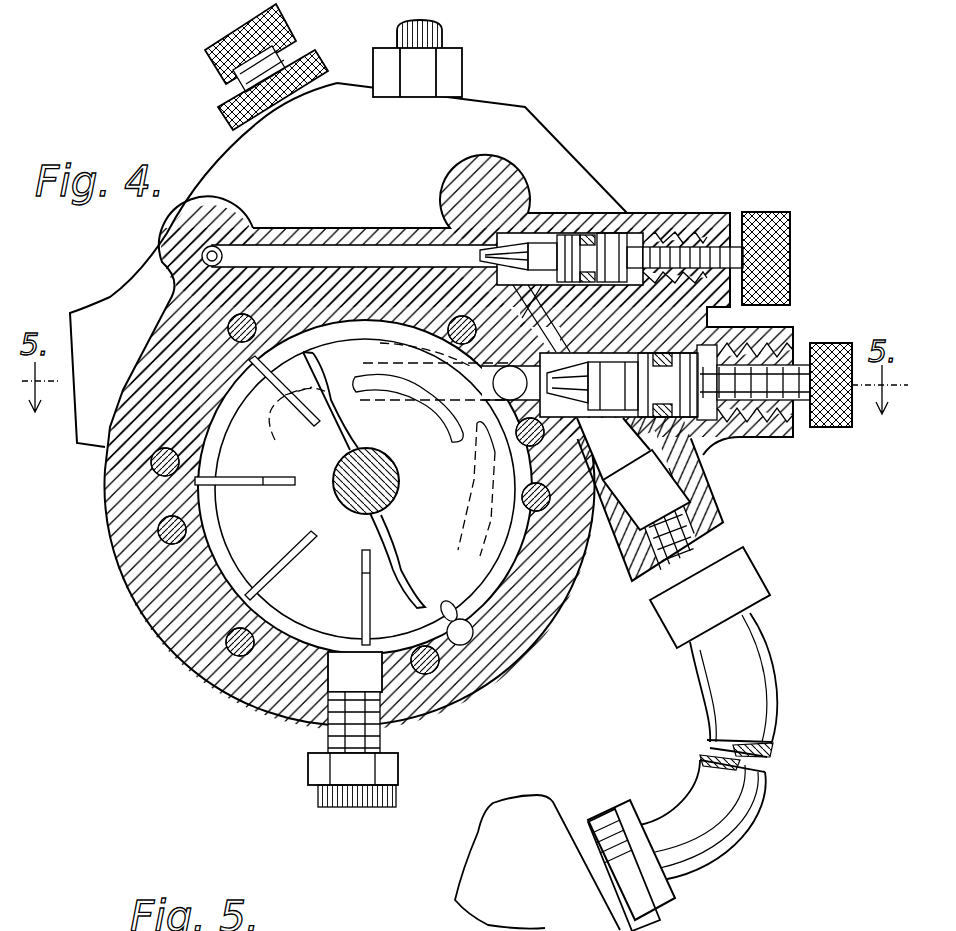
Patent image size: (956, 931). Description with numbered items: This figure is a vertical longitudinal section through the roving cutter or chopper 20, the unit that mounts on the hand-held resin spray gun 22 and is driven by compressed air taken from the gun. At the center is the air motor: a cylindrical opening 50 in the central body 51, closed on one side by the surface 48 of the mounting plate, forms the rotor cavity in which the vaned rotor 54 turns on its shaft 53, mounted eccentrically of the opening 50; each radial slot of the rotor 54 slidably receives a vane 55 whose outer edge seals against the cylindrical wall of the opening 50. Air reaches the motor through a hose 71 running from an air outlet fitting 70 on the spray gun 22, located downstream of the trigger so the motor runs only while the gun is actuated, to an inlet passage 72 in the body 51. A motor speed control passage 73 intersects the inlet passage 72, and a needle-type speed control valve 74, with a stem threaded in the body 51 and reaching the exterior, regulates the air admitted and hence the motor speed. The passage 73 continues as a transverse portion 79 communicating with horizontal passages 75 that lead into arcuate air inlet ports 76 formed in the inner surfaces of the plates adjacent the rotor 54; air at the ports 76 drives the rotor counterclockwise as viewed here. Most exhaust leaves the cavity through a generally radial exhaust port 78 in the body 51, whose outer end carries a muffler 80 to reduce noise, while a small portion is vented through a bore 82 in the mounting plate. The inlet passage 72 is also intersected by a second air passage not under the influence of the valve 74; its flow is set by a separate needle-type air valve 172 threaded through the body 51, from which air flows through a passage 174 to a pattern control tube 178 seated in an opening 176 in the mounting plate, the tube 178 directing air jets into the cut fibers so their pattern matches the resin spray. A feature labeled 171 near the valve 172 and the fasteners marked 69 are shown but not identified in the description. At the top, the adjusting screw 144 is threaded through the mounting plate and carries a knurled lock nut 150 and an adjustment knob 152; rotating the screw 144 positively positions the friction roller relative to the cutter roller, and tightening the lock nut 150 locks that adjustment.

The roving cutter 20 is at (607, 124).
The hand-held resin spray gun 22 is at (524, 783).
The surface of the mounting plate 48 is at (225, 550).
The cylindrical opening 50 is at (205, 560).
The central body 51 is at (146, 651).
The rotor shaft 53 is at (390, 478).
The vaned rotor 54 is at (255, 501).
The vane 55 is at (363, 572).
The bolts 69 is at (150, 466).
The air outlet fitting 70 is at (540, 815).
The air hose 71 is at (763, 795).
The inlet passage 72 is at (688, 488).
The motor speed control passage 73 is at (643, 477).
The speed control valve 74 is at (840, 334).
The horizontal passages 75 is at (382, 357).
The arcuate air inlet ports 76 is at (435, 418).
The exhaust port 78 is at (330, 680).
The transverse portion 79 is at (508, 366).
The muffler 80 is at (318, 798).
The bore 82 is at (462, 513).
The adjusting screw 144 is at (255, 70).
The knurled lock nut 150 is at (303, 72).
The adjustment knob 152 is at (206, 48).
The passage 171 is at (548, 332).
The air valve 172 is at (797, 224).
The passage 174 is at (355, 245).
The opening 176 is at (258, 225).
The pattern control tube 178 is at (202, 256).